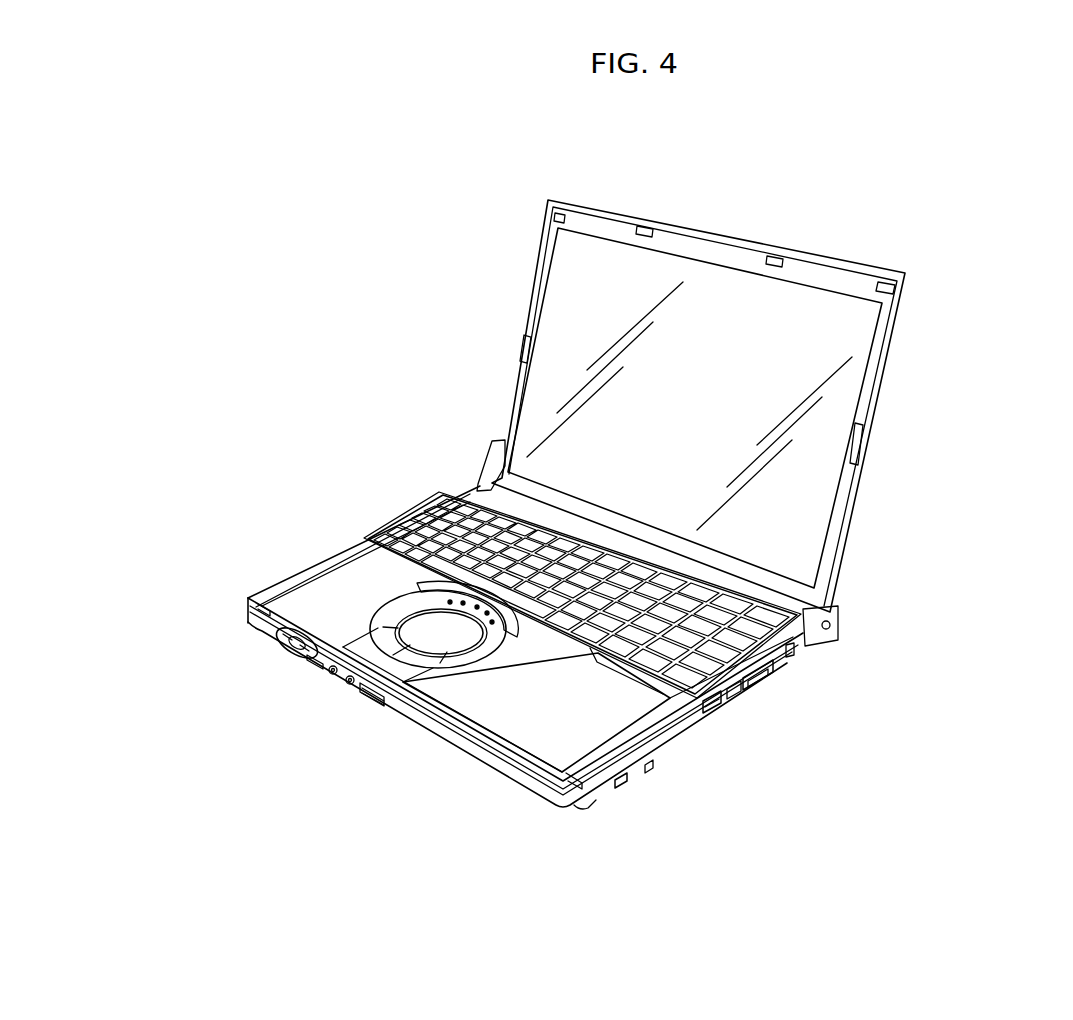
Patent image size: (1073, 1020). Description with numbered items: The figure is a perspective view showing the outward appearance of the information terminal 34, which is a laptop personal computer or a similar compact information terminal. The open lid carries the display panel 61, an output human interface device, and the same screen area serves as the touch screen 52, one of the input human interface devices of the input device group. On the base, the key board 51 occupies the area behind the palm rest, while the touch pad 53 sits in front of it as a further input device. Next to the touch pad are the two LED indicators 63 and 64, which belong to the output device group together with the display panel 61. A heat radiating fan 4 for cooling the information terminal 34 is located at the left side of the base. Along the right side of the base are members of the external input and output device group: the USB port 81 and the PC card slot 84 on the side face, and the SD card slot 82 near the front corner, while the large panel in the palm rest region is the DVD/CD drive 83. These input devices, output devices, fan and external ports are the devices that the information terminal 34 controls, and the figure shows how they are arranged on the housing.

The information terminal 34 is at (965, 259).
The display panel 61 is at (584, 306).
The touch screen 52 is at (578, 386).
The heat radiating fan 4 is at (403, 522).
The LED indicator 63 is at (413, 586).
The LED indicator 64 is at (292, 616).
The key board 51 is at (760, 617).
The touch pad 53 is at (430, 634).
The DVD/CD drive 83 is at (535, 717).
The USB port 81 is at (730, 708).
The PC card slot 84 is at (686, 755).
The SD card slot 82 is at (613, 790).